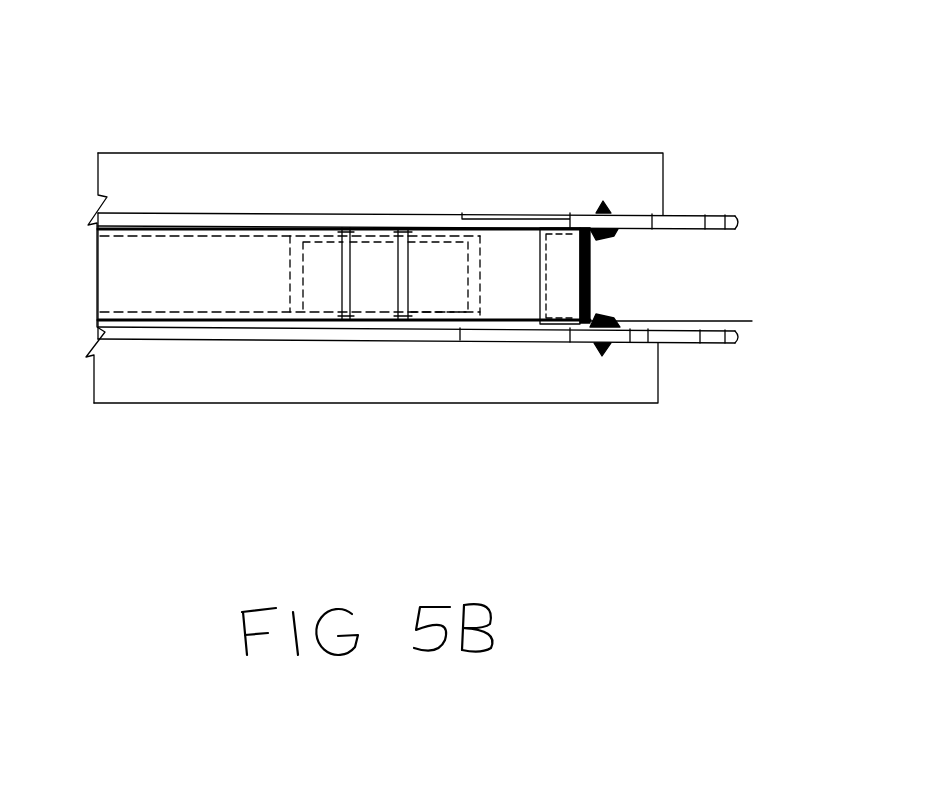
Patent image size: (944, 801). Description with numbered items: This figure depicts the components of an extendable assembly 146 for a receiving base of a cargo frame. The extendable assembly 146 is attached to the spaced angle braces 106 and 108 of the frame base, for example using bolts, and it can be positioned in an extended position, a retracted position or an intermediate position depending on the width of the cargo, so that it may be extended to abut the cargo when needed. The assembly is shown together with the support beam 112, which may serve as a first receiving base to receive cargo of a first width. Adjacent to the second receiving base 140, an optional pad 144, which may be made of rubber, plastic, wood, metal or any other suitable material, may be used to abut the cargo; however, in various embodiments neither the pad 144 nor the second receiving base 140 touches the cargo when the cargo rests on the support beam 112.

The angle brace 106 is at (523, 167).
The angle brace 108 is at (548, 380).
The support beam 112 is at (223, 278).
The second receiving base 140 is at (450, 287).
The pad 144 is at (375, 288).
The extendable assembly 146 is at (577, 278).